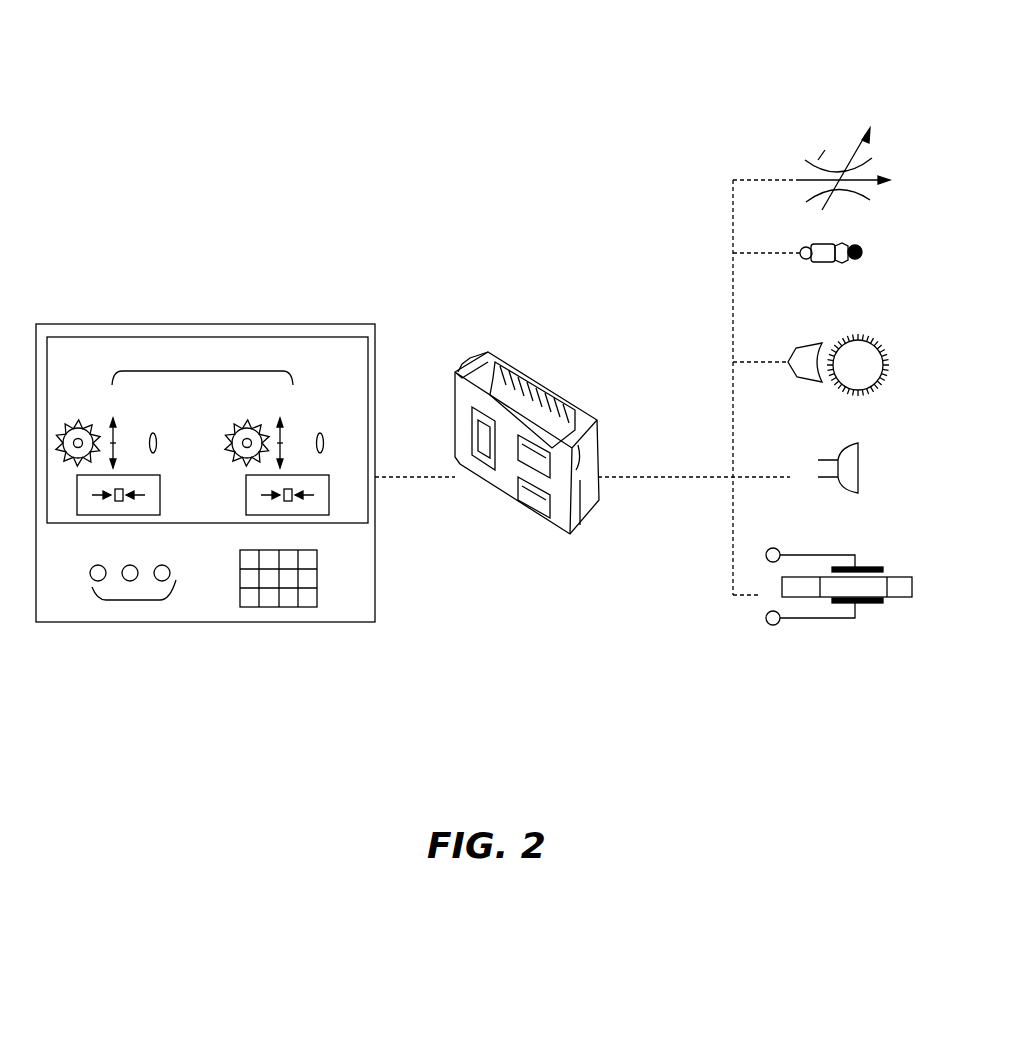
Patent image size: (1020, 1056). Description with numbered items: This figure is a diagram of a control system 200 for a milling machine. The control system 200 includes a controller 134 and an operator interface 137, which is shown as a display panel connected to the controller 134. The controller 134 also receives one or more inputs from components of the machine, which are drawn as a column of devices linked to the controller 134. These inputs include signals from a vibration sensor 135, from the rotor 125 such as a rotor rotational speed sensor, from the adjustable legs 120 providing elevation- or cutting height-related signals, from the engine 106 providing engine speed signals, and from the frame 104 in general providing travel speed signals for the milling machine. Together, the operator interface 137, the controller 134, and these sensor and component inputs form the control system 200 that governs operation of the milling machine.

The control system 200 is at (256, 83).
The operator interface 137 is at (317, 323).
The controller 134 is at (540, 387).
The adjustable legs 120 is at (843, 166).
The engine 106 is at (812, 247).
The rotor 125 is at (810, 342).
The frame 104 is at (837, 453).
The vibration sensor 135 is at (813, 550).